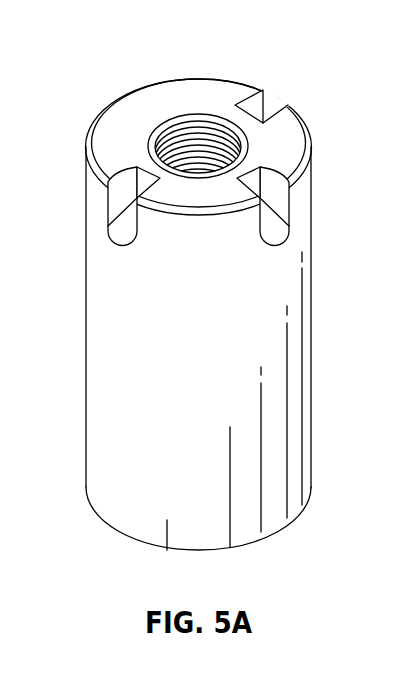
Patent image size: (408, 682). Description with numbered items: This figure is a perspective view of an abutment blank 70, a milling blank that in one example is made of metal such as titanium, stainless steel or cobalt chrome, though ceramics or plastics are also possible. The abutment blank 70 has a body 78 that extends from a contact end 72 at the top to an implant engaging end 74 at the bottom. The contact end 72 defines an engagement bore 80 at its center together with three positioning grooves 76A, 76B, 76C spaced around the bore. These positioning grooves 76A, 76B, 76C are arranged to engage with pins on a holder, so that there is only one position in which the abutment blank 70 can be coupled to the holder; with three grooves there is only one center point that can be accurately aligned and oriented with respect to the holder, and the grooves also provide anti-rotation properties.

The abutment blank 70 is at (192, 288).
The contact end 72 is at (134, 102).
The implant engaging end 74 is at (268, 537).
The positioning groove 76A is at (263, 108).
The positioning groove 76B is at (274, 189).
The positioning groove 76C is at (118, 192).
The body 78 is at (86, 363).
The engagement bore 80 is at (182, 149).